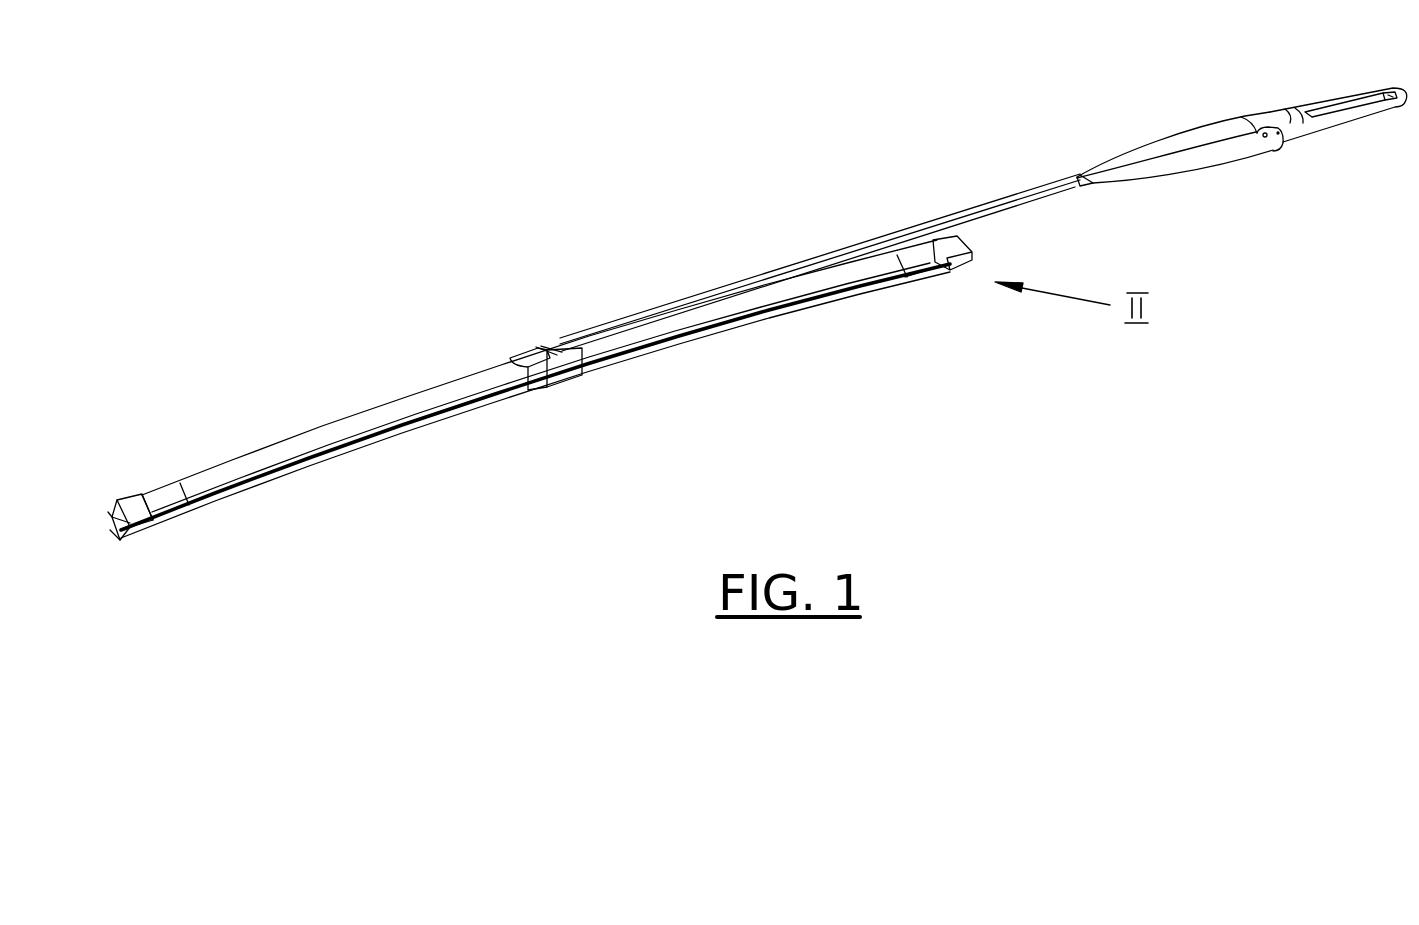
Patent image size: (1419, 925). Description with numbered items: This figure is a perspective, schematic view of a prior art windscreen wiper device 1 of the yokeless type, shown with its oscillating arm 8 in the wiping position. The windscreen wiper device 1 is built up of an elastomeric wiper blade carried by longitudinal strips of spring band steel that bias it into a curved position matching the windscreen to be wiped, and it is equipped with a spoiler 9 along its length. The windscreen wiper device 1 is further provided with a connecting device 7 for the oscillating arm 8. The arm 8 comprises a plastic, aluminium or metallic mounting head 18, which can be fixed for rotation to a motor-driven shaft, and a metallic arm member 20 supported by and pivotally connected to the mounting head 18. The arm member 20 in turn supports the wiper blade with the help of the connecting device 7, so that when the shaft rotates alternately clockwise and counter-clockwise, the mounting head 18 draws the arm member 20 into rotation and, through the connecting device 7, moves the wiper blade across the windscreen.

The windscreen wiper device 1 is at (613, 120).
The connecting device 7 is at (537, 348).
The oscillating arm 8 is at (895, 157).
The spoiler 9 is at (365, 423).
The mounting head 18 is at (1333, 127).
The arm member 20 is at (1187, 140).